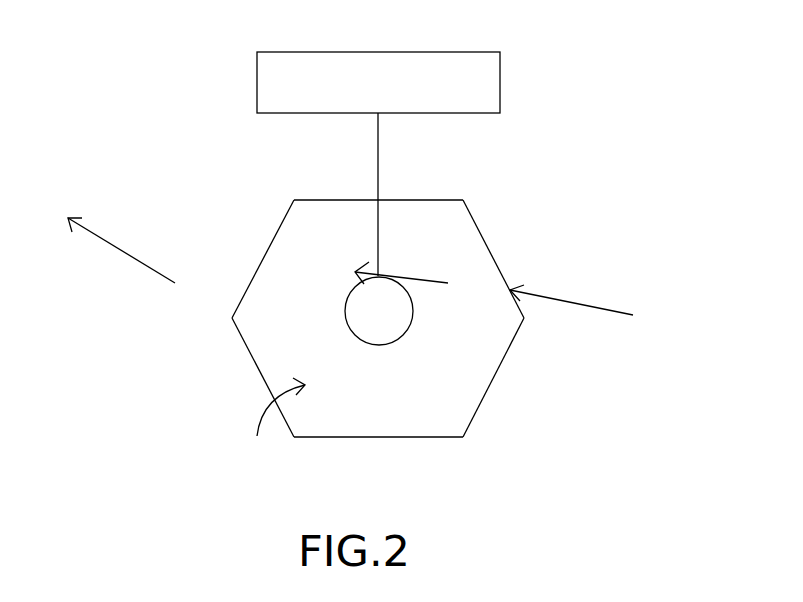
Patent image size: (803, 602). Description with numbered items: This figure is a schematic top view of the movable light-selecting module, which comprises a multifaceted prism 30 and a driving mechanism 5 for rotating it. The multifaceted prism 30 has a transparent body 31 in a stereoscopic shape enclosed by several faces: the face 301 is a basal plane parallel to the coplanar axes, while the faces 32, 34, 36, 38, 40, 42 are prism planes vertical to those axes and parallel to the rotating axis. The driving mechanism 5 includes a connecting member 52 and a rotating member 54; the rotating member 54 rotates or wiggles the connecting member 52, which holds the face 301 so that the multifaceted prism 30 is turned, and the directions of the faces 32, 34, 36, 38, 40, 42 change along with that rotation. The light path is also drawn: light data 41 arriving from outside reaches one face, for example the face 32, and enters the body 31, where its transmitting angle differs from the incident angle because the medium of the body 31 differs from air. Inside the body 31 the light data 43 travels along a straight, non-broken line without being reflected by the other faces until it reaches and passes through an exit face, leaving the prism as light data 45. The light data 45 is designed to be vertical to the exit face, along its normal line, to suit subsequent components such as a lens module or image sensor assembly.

The driving mechanism 5 is at (410, 145).
The rotating member 54 is at (448, 62).
The connecting member 52 is at (376, 178).
The multifaceted prism 30 is at (375, 320).
The transparent body 31 is at (380, 328).
The face 42 is at (342, 197).
The face 32 is at (492, 252).
The face 34 is at (496, 380).
The face 36 is at (382, 440).
The face 38 is at (245, 352).
The face 40 is at (268, 248).
The light data 43 is at (402, 275).
The light data 41 is at (570, 300).
The light data 45 is at (135, 262).
The face 301 is at (270, 422).